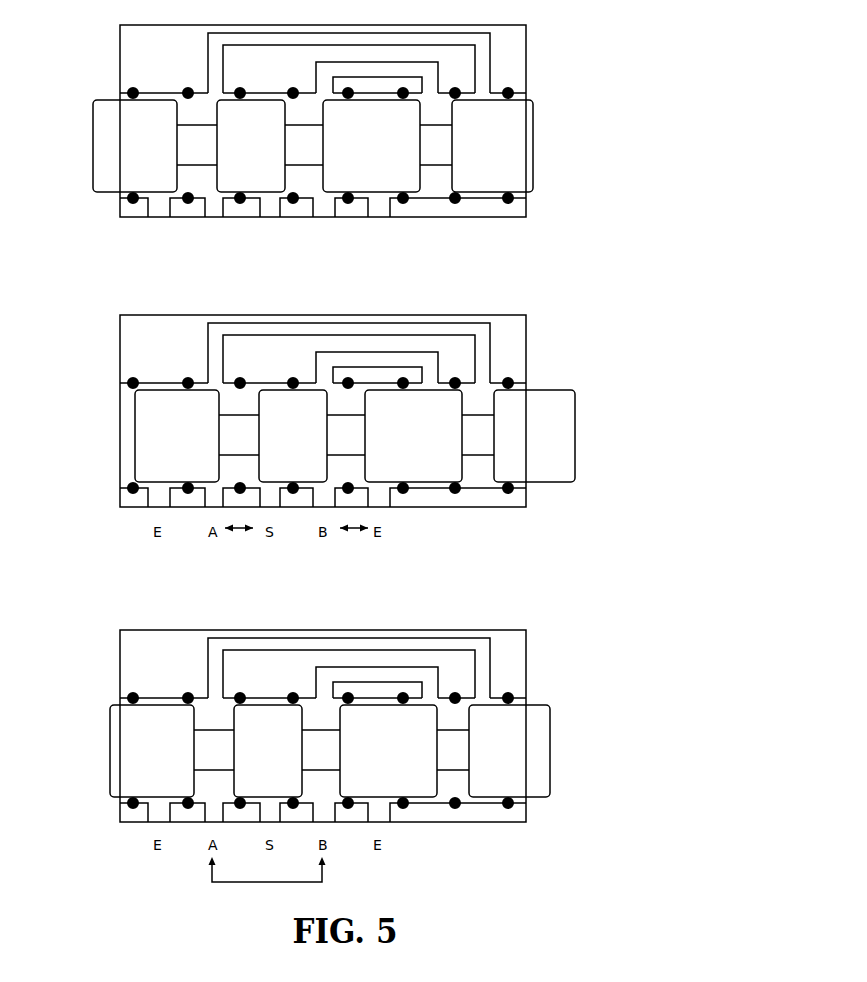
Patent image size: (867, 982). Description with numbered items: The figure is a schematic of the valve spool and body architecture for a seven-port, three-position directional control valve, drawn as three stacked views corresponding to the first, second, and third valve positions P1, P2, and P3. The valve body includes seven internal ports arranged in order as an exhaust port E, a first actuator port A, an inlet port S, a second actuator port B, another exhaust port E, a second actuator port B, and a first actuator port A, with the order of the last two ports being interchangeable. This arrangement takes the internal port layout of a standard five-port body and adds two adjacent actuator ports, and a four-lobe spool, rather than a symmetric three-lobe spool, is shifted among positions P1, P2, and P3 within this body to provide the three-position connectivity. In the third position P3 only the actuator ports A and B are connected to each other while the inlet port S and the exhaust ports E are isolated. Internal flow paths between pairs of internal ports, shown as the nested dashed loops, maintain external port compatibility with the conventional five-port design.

The first valve position P1 is at (93, 145).
The second valve position P2 is at (135, 435).
The third valve position P3 is at (110, 753).
The exhaust port E is at (323, 223).
The first actuator port A is at (175, 237).
The inlet port S is at (313, 237).
The second actuator port B is at (343, 223).